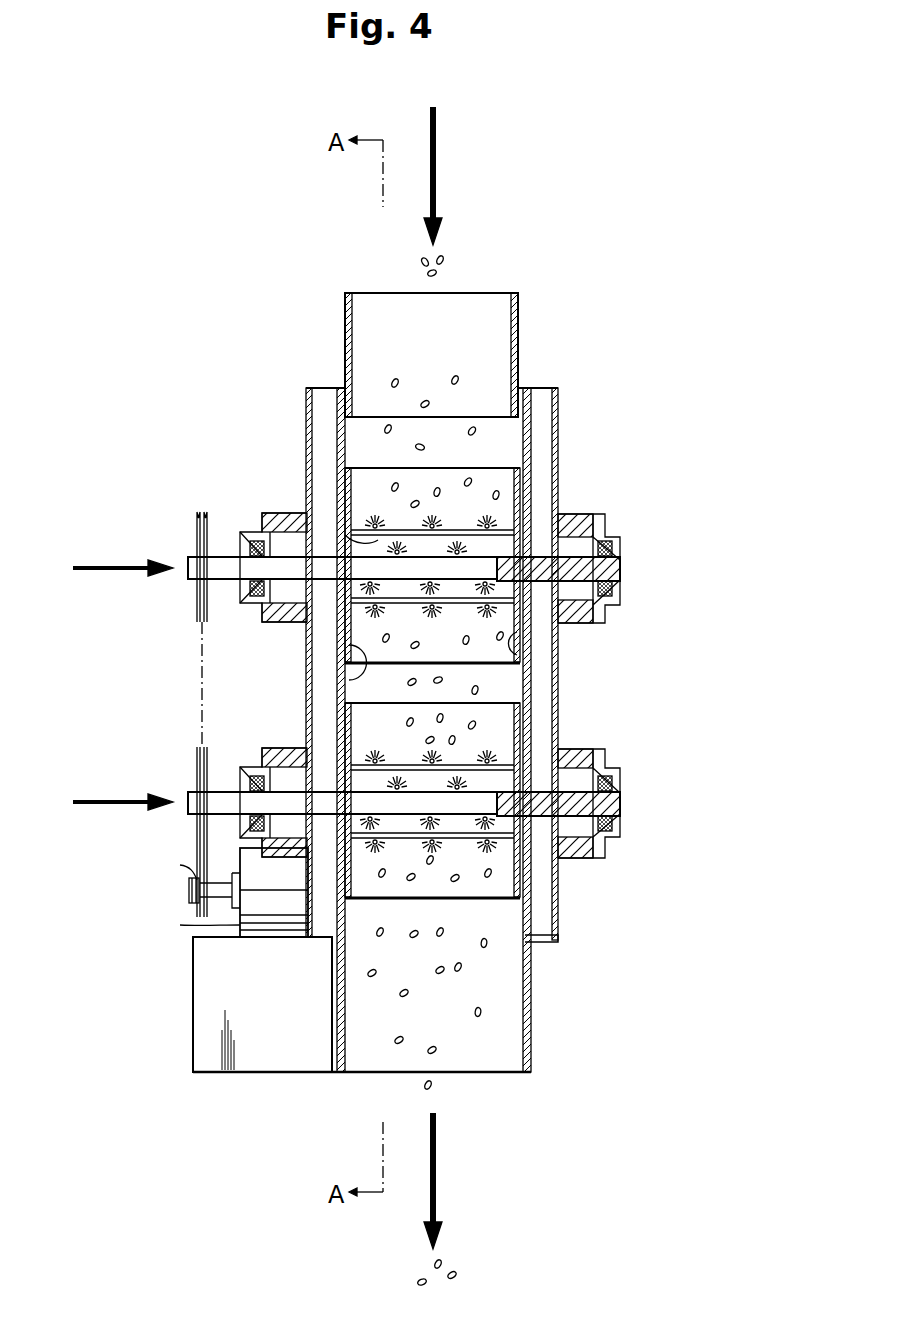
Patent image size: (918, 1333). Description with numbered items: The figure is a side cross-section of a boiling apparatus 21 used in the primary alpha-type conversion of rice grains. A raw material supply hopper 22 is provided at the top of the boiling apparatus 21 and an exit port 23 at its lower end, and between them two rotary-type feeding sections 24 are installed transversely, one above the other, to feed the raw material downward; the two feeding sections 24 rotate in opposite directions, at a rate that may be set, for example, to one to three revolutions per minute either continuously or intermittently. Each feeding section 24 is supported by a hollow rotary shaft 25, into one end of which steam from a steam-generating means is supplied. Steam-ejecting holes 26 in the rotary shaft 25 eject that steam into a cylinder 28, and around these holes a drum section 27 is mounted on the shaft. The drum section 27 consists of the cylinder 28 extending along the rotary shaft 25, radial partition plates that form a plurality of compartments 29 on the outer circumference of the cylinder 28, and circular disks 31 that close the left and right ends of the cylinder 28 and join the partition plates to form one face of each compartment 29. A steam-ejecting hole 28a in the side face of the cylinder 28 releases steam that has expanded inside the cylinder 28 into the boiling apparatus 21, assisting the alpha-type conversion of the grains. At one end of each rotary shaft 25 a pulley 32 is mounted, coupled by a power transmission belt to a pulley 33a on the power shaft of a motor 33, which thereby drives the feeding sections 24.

The boiling apparatus 21 is at (664, 289).
The raw material supply hopper 22 is at (518, 313).
The exit port 23 is at (508, 1073).
The rotary-type feeding section 24 is at (496, 484).
The hollow rotary shaft 25 is at (562, 552).
The steam-ejecting hole 26 is at (462, 578).
The drum section 27 is at (507, 518).
The cylinder 28 is at (398, 617).
The steam-ejecting hole 28a is at (346, 536).
The compartment 29 is at (435, 480).
The circular disk 31 is at (360, 676).
The pulley 32 is at (197, 752).
The motor 33 is at (240, 925).
The pulley 33a is at (197, 868).